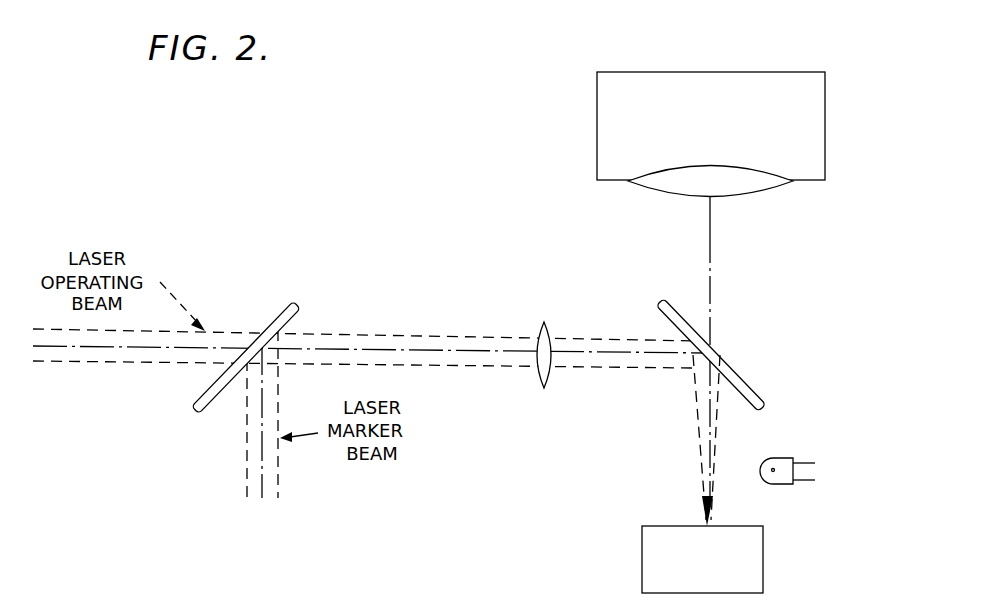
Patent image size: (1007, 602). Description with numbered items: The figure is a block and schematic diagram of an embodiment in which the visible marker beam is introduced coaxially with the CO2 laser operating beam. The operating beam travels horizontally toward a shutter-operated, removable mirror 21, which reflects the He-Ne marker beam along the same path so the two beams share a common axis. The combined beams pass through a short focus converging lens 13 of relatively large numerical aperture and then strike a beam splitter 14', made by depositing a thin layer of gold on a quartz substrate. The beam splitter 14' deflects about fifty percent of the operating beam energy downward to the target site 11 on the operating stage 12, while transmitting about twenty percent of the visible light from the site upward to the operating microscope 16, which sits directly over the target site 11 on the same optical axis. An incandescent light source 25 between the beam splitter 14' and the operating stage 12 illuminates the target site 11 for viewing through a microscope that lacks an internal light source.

The operating microscope 16 is at (597, 132).
The removable mirror 21 is at (292, 304).
The converging lens 13 is at (540, 330).
The beam splitter 14' is at (718, 355).
The target site 11 is at (705, 525).
The operating stage 12 is at (642, 563).
The incandescent light source 25 is at (770, 458).